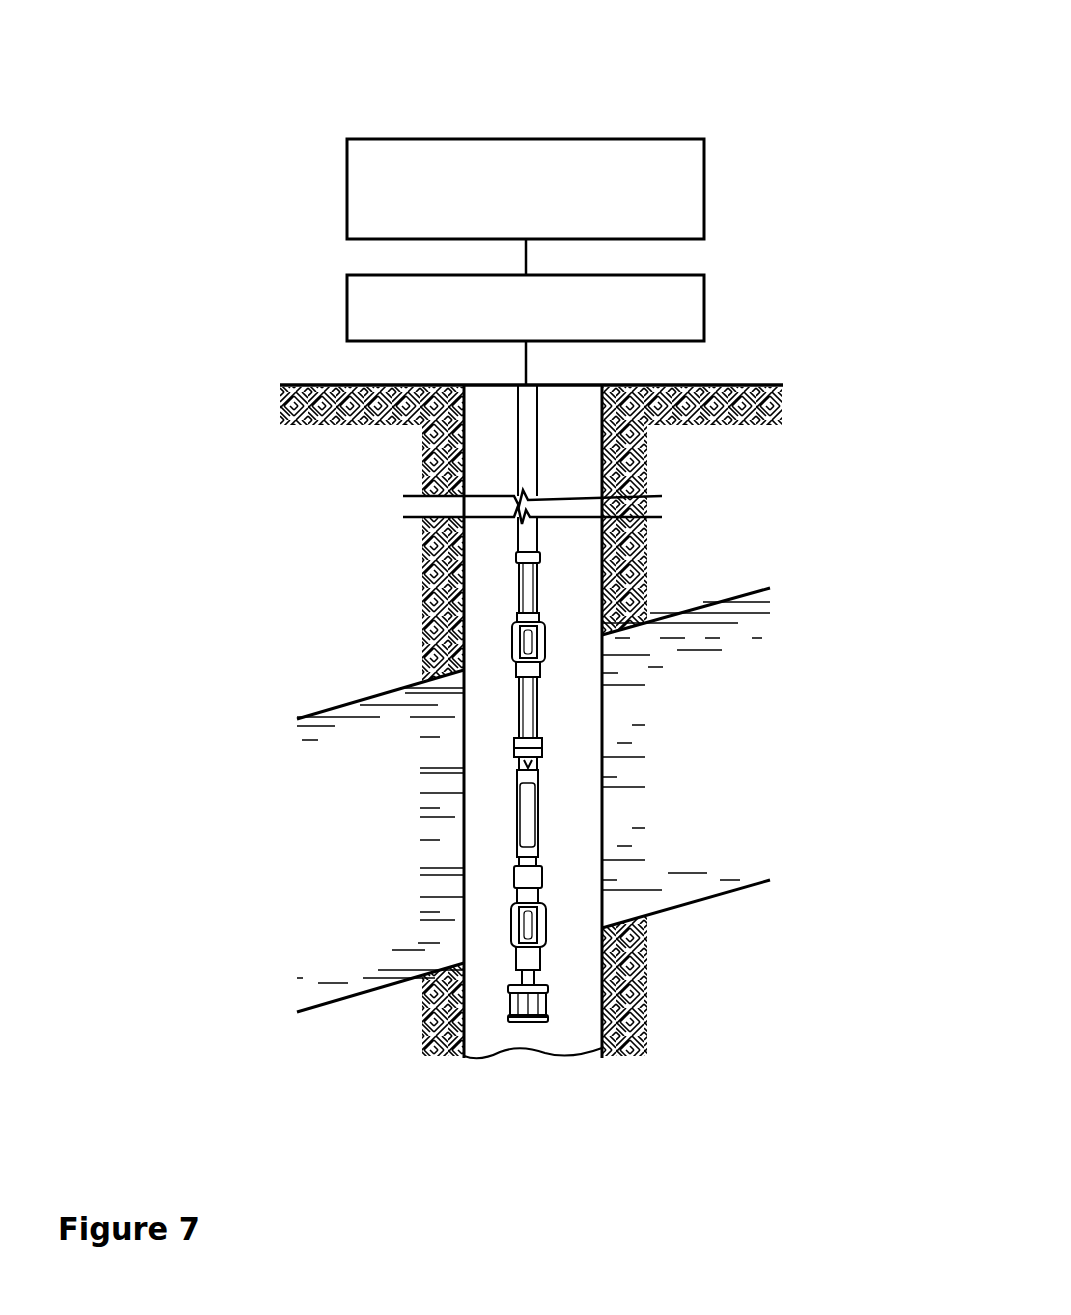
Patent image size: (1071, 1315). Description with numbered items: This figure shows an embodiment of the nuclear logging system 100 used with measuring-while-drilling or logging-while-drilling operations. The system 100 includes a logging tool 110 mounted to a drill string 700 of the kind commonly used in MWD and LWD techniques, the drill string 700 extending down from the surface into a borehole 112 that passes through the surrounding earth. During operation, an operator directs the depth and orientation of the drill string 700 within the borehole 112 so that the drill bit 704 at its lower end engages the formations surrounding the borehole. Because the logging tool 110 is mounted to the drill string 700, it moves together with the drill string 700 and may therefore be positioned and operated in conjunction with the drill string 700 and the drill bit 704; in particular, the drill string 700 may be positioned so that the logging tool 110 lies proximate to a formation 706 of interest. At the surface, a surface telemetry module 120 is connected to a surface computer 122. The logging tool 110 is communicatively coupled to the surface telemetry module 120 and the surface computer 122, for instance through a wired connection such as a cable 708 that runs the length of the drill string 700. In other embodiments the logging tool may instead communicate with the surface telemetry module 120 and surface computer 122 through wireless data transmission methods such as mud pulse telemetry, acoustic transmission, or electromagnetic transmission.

The nuclear logging system 100 is at (410, 68).
The surface telemetry module 120 is at (668, 218).
The surface computer 122 is at (688, 307).
The borehole 112 is at (516, 441).
The drill string 700 is at (522, 582).
The cable 708 is at (540, 775).
The logging tool 110 is at (522, 812).
The drill bit 704 is at (545, 1000).
The formation 706 is at (712, 727).